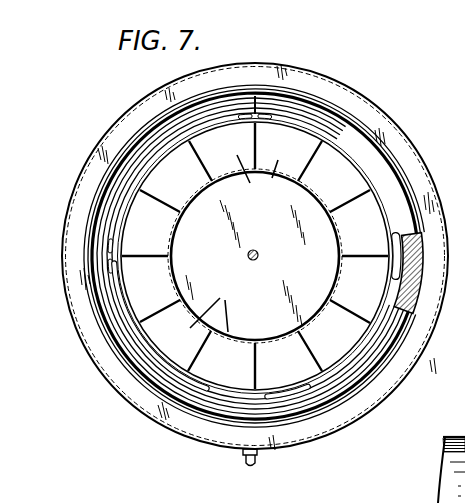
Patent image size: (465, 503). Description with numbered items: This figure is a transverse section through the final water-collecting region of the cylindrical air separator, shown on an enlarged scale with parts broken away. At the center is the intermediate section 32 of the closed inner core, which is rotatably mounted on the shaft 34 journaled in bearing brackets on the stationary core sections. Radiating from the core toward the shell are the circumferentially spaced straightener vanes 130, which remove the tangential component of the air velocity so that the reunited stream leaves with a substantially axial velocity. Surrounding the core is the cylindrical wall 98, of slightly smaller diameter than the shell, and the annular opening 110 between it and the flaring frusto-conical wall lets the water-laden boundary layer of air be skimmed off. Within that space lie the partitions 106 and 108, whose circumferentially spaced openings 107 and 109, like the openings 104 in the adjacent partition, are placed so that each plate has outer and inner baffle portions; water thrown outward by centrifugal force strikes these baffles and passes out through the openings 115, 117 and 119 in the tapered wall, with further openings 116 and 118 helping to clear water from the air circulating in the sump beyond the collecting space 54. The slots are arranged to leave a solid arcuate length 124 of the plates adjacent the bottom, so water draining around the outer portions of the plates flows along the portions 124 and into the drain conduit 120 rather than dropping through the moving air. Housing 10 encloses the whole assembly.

The housing 10 is at (427, 201).
The intermediate section of the inner core 32 is at (170, 230).
The shaft 34 is at (253, 250).
The collecting space 54 is at (464, 368).
The cylindrical wall 98 is at (222, 398).
The openings 104 is at (390, 182).
The partition 106 is at (332, 120).
The openings 107 is at (345, 136).
The partition 108 is at (248, 97).
The openings 109 is at (148, 160).
The annular opening 110 is at (464, 384).
The opening 115 is at (342, 380).
The opening 116 is at (157, 380).
The opening 117 is at (110, 327).
The opening 118 is at (107, 197).
The opening 119 is at (291, 95).
The drain conduit 120 is at (258, 459).
The solid arcuate length of the plates 124 is at (267, 397).
The straightener vanes 130 is at (312, 182).